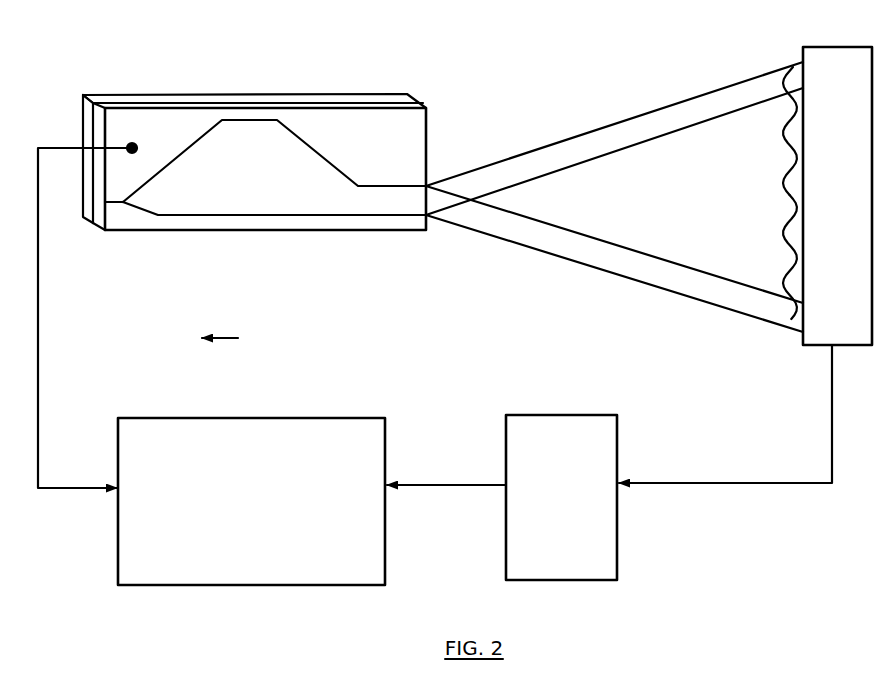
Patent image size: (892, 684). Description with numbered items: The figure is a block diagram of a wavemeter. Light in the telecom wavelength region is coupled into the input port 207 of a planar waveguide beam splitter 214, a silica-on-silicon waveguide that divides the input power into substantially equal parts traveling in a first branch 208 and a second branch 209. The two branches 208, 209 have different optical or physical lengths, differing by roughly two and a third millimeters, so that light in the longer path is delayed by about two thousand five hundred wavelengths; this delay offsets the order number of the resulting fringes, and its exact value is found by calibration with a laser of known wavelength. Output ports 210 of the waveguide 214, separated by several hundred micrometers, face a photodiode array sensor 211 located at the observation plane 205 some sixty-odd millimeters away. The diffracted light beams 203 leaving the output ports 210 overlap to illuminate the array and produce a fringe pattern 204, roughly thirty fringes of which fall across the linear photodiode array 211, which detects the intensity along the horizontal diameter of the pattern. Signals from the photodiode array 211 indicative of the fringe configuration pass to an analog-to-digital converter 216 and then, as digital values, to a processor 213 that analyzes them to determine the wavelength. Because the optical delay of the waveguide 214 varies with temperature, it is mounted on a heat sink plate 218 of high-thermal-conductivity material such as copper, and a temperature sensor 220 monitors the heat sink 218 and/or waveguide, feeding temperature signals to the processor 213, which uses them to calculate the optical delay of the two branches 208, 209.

The diffracted light beams 203 is at (601, 244).
The fringe pattern 204 is at (781, 234).
The observation plane 205 is at (797, 45).
The input port 207 is at (124, 206).
The first branch 208 is at (183, 211).
The second branch 209 is at (306, 133).
The output ports 210 is at (428, 212).
The photodiode array sensor 211 is at (791, 111).
The processor 213 is at (230, 416).
The planar waveguide beam splitter 214 is at (281, 231).
The analog-to-digital converter 216 is at (567, 412).
The heat sink plate 218 is at (87, 127).
The temperature sensor 220 is at (135, 141).